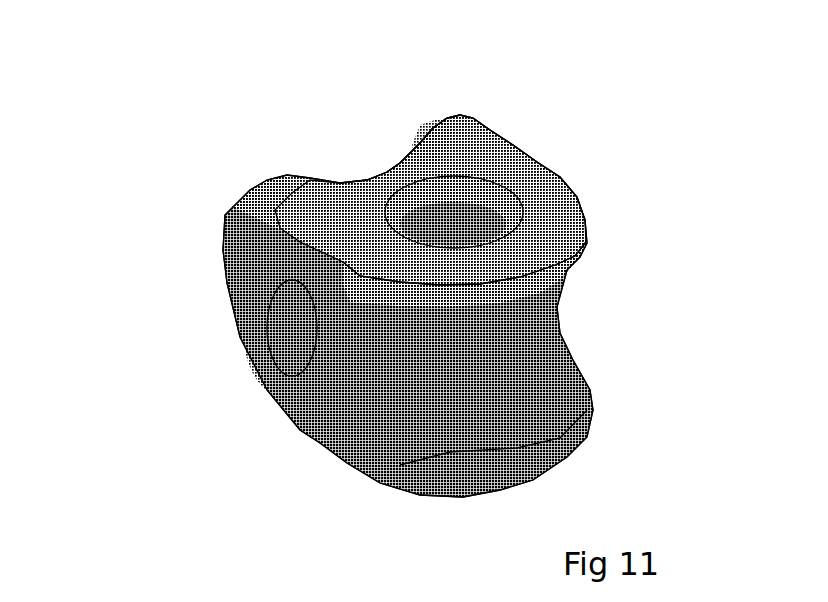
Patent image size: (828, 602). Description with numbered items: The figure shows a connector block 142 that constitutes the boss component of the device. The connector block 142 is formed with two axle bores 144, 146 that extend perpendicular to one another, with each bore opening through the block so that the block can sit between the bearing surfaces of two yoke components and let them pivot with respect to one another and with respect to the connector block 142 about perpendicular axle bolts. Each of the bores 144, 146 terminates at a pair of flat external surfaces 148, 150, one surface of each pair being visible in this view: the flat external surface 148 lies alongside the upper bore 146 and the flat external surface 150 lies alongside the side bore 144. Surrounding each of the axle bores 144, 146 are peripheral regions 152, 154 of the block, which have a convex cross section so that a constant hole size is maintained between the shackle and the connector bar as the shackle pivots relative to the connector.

The connector block 142 is at (285, 135).
The axle bore 144 is at (273, 315).
The axle bore 146 is at (455, 207).
The flat external surface 148 is at (567, 187).
The flat external surface 150 is at (257, 376).
The peripheral region 152 is at (387, 172).
The peripheral region 154 is at (567, 327).